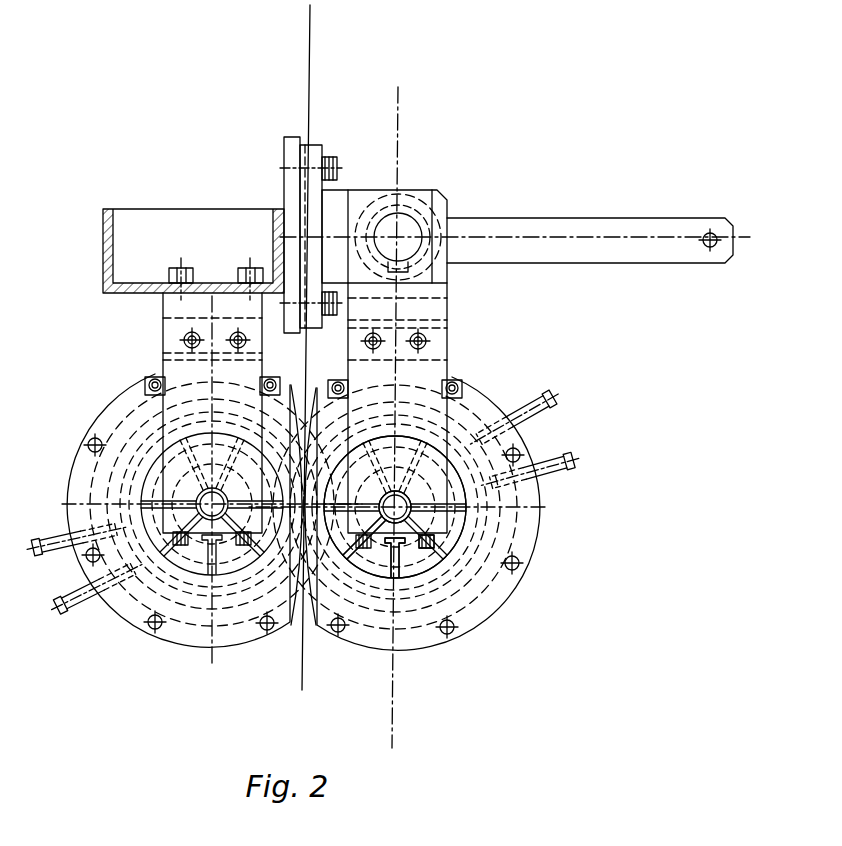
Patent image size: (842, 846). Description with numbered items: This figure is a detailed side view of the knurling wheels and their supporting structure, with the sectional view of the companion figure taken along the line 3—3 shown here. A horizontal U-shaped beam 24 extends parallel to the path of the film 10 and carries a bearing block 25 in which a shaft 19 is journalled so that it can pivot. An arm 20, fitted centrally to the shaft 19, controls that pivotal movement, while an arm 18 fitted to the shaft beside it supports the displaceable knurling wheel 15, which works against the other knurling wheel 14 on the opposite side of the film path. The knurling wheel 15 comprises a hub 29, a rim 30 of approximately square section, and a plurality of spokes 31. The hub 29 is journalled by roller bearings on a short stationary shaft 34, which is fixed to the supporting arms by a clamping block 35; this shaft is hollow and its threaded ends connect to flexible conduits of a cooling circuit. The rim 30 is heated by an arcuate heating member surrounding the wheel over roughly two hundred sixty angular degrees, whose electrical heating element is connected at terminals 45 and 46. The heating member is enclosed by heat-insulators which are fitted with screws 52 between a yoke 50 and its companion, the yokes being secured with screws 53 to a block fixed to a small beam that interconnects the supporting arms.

The film 10 is at (310, 48).
The section line 3— 3 is at (398, 99).
The first wheel assembly 14 is at (92, 408).
The displaceable knurling wheel 15 is at (549, 446).
The arm 18 is at (448, 362).
The shaft 19 is at (412, 230).
The arm 20 is at (576, 262).
The horizontal U-shaped beam 24 is at (217, 283).
The bearing block 25 is at (340, 197).
The hub 29 is at (408, 558).
The rim 30 is at (373, 590).
The spokes 31 is at (404, 560).
The short stationary shaft 34 is at (410, 517).
The clamping block 35 is at (442, 538).
The terminal 45 is at (548, 422).
The terminal 46 is at (562, 475).
The yoke 50 is at (460, 382).
The screws 52 is at (338, 380).
The screws 53 is at (424, 336).